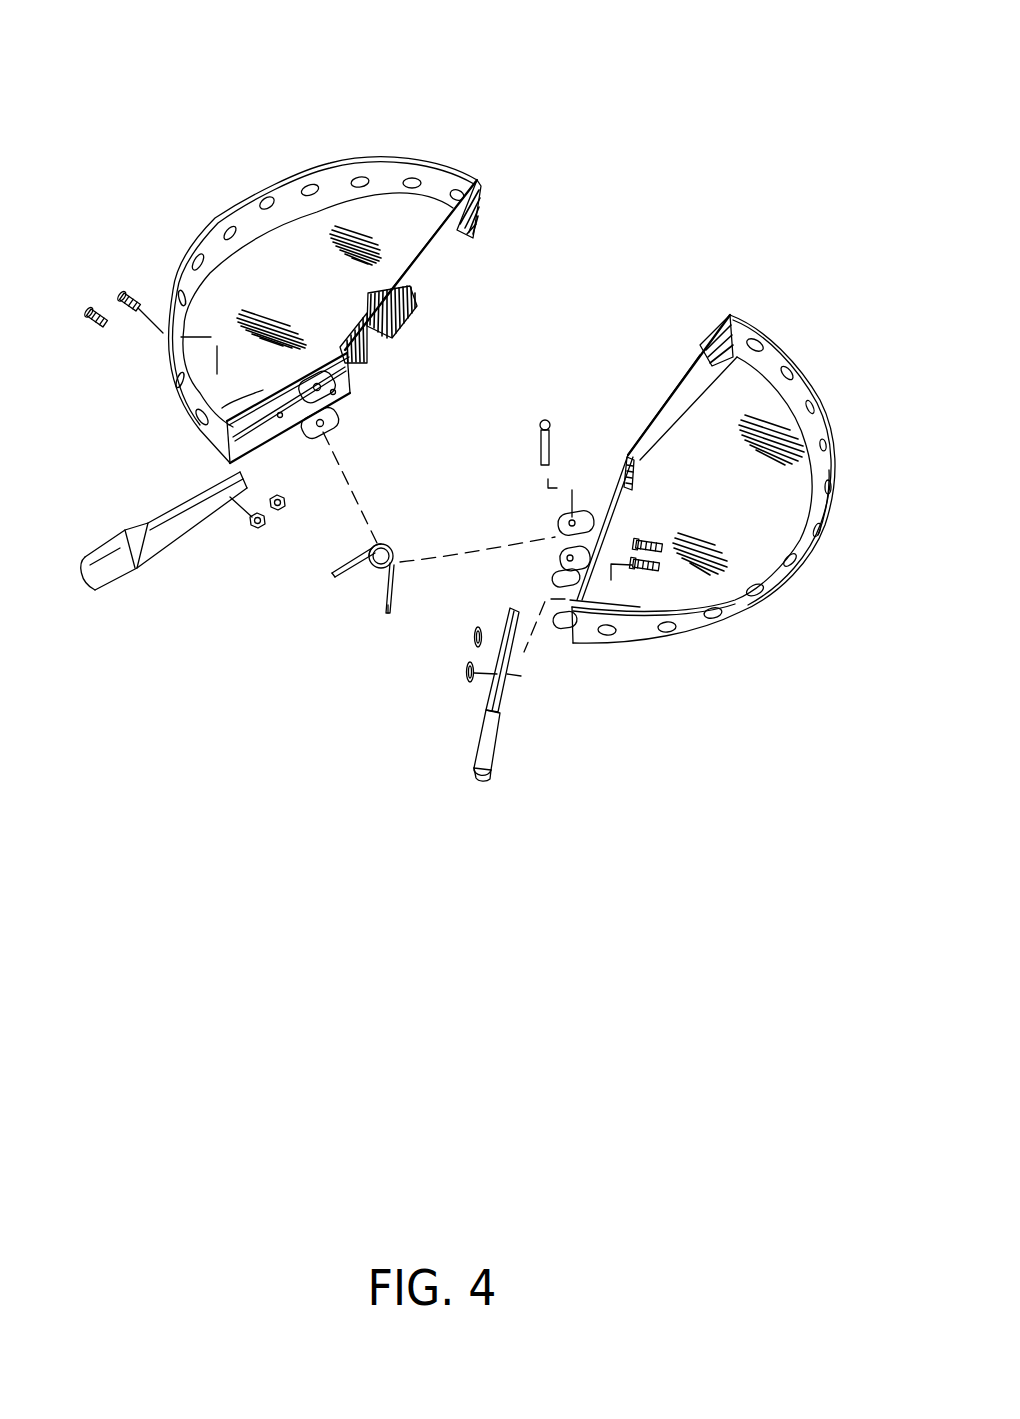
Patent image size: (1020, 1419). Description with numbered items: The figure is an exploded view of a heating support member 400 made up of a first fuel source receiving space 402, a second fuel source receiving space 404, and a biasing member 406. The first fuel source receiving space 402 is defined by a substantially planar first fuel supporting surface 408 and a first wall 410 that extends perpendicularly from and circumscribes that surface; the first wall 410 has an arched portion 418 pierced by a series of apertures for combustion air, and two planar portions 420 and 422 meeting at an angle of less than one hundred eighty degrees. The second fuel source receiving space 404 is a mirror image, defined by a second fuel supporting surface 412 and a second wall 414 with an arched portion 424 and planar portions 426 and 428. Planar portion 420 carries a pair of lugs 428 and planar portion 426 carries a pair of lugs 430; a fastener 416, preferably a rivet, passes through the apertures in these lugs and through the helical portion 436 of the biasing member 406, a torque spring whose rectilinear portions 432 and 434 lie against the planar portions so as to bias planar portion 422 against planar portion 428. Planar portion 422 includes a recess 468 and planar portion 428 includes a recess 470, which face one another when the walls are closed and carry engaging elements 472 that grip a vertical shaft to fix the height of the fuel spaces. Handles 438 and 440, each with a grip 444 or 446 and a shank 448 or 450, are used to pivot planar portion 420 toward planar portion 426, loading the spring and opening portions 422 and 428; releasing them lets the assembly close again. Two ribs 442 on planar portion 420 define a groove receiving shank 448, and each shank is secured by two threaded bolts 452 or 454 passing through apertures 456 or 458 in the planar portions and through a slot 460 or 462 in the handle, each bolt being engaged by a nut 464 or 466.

The heating support member 400 is at (116, 64).
The first fuel source receiving space 402 is at (293, 240).
The second fuel source receiving space 404 is at (790, 497).
The biasing member 406 is at (360, 577).
The first fuel supporting surface 408 is at (397, 212).
The first wall 410 is at (215, 225).
The second fuel supporting surface 412 is at (760, 543).
The second wall 414 is at (788, 362).
The fastener 416 is at (548, 420).
The arched portion of the first wall 418 is at (331, 188).
The planar portion of the first wall 420 is at (347, 372).
The planar portion of the first wall 422 is at (430, 253).
The arched portion of the second wall 424 is at (827, 452).
The planar portion of the second wall 426 is at (595, 505).
The lugs 428 is at (330, 424).
The lugs 430 is at (560, 530).
The rectilinear portion 432 is at (337, 573).
The rectilinear portion 434 is at (380, 613).
The helical portion 436 is at (396, 565).
The handle 438 is at (85, 583).
The handle 440 is at (482, 765).
The ribs 442 is at (229, 428).
The grip 444 is at (110, 570).
The grip 446 is at (496, 753).
The shank 448 is at (167, 520).
The shank 450 is at (513, 640).
The threaded bolts 452 is at (124, 294).
The threaded bolts 454 is at (660, 557).
The apertures 456 is at (287, 503).
The apertures 458 is at (613, 565).
The slot 460 is at (182, 530).
The slot 462 is at (513, 638).
The nut 464 is at (278, 512).
The nut 466 is at (473, 637).
The recess 468 is at (394, 326).
The recess 470 is at (634, 455).
The engaging element 472 is at (403, 322).